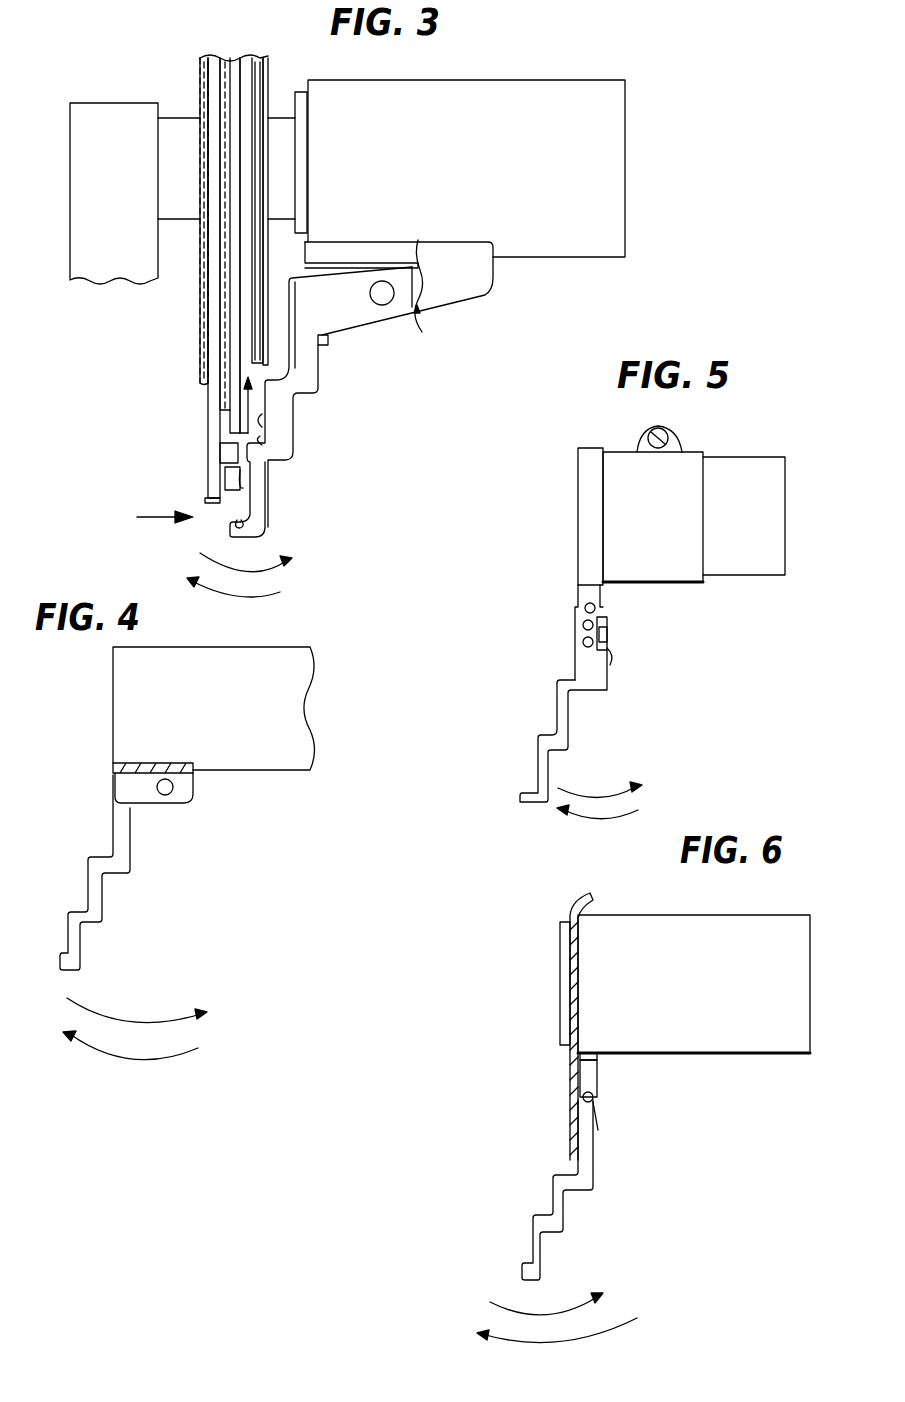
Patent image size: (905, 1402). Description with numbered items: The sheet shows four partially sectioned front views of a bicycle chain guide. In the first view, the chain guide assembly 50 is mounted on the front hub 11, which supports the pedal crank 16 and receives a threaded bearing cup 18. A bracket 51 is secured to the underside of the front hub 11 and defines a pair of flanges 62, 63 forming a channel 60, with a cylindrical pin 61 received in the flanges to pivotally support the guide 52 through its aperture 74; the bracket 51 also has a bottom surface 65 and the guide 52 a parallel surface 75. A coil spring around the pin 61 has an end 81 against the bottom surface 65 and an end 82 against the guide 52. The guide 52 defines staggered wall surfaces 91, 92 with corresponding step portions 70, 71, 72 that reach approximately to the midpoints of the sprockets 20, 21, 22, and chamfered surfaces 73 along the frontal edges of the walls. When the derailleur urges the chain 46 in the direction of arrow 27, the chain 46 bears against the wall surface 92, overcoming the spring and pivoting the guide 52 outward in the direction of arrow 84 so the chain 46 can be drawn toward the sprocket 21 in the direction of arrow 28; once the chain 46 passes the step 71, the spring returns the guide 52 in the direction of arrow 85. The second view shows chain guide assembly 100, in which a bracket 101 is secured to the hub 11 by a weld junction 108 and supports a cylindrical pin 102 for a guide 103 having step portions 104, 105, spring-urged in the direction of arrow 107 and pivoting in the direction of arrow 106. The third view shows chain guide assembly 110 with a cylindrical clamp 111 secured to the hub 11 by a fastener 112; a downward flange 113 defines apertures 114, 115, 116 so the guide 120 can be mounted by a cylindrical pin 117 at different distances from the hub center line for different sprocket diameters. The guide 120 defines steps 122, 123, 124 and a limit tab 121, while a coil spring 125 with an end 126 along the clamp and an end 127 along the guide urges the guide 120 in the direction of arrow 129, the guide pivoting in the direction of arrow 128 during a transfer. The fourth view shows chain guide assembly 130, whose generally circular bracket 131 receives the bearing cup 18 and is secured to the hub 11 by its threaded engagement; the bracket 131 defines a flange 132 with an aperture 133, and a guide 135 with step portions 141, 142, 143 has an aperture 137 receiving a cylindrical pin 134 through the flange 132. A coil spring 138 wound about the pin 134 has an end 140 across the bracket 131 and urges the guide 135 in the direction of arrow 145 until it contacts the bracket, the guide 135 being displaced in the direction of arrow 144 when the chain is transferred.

In FIG. 3, the front hub 11 is at (577, 230).
In FIG. 4, the front hub 11 is at (283, 713).
In FIG. 5, the front hub 11 is at (758, 525).
In FIG. 6, the front hub 11 is at (785, 978).
In FIG. 3, the pedal crank 16 is at (118, 112).
In FIG. 3, the bearing cup 18 is at (293, 158).
In FIG. 6, the bearing cup 18 is at (560, 963).
In FIG. 3, the front sprocket 20 is at (258, 313).
In FIG. 3, the front sprocket 21 is at (237, 353).
In FIG. 3, the front sprocket 22 is at (210, 438).
In FIG. 3, the arrow 27 is at (158, 517).
In FIG. 3, the arrow 28 is at (230, 407).
In FIG. 3, the chain 46 is at (243, 487).
In FIG. 3, the chain guide assembly 50 is at (407, 393).
In FIG. 3, the bracket 51 is at (465, 282).
In FIG. 3, the guide 52 is at (282, 413).
In FIG. 3, the channel 60 is at (417, 310).
In FIG. 3, the cylindrical pin 61 is at (373, 308).
In FIG. 3, the flange 62 is at (420, 312).
In FIG. 3, the flange 63 is at (446, 300).
In FIG. 3, the bottom surface 65 is at (353, 280).
In FIG. 3, the step portion 70 is at (280, 350).
In FIG. 3, the step portion 71 is at (262, 445).
In FIG. 3, the step portion 72 is at (252, 512).
In FIG. 3, the chamfered surfaces 73 is at (253, 503).
In FIG. 3, the aperture 74 is at (370, 294).
In FIG. 3, the surface 75 is at (320, 272).
In FIG. 3, the spring end 81 is at (420, 262).
In FIG. 3, the spring end 82 is at (327, 345).
In FIG. 3, the arrow 84 is at (273, 577).
In FIG. 3, the arrow 85 is at (237, 598).
In FIG. 3, the wall surface 91 is at (262, 427).
In FIG. 3, the wall surface 92 is at (273, 460).
In FIG. 4, the chain guide assembly 100 is at (193, 826).
In FIG. 4, the bracket 101 is at (188, 784).
In FIG. 4, the cylindrical pin 102 is at (165, 795).
In FIG. 4, the guide 103 is at (107, 855).
In FIG. 4, the step portion 104 is at (87, 905).
In FIG. 4, the step portion 105 is at (63, 950).
In FIG. 4, the arrow 106 is at (152, 1020).
In FIG. 4, the arrow 107 is at (143, 1058).
In FIG. 4, the weld junction 108 is at (143, 768).
In FIG. 5, the chain guide assembly 110 is at (652, 632).
In FIG. 5, the clamp 111 is at (687, 467).
In FIG. 5, the fastener 112 is at (673, 432).
In FIG. 5, the flange 113 is at (573, 590).
In FIG. 5, the aperture 114 is at (585, 607).
In FIG. 5, the aperture 115 is at (583, 625).
In FIG. 5, the aperture 116 is at (583, 642).
In FIG. 5, the cylindrical pin 117 is at (602, 620).
In FIG. 5, the guide 120 is at (588, 667).
In FIG. 5, the limit tab 121 is at (607, 635).
In FIG. 5, the step 122 is at (563, 682).
In FIG. 5, the step 123 is at (548, 733).
In FIG. 5, the step 124 is at (532, 780).
In FIG. 5, the coil spring 125 is at (610, 652).
In FIG. 5, the spring end 126 is at (607, 590).
In FIG. 5, the spring end 127 is at (608, 662).
In FIG. 5, the arrow 128 is at (600, 793).
In FIG. 5, the arrow 129 is at (607, 820).
In FIG. 6, the chain guide assembly 130 is at (617, 1100).
In FIG. 6, the bracket 131 is at (593, 908).
In FIG. 6, the flange 132 is at (600, 1088).
In FIG. 6, the aperture 133 is at (597, 1080).
In FIG. 6, the cylindrical pin 134 is at (595, 1103).
In FIG. 6, the guide 135 is at (592, 1178).
In FIG. 6, the aperture 137 is at (595, 1110).
In FIG. 6, the coil spring 138 is at (582, 1100).
In FIG. 6, the spring end 140 is at (593, 1057).
In FIG. 6, the step portion 141 is at (563, 1175).
In FIG. 6, the step portion 142 is at (545, 1215).
In FIG. 6, the step portion 143 is at (523, 1262).
In FIG. 6, the arrow 144 is at (568, 1310).
In FIG. 6, the arrow 145 is at (582, 1347).